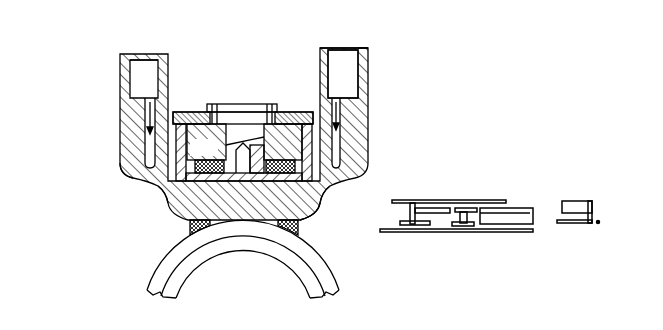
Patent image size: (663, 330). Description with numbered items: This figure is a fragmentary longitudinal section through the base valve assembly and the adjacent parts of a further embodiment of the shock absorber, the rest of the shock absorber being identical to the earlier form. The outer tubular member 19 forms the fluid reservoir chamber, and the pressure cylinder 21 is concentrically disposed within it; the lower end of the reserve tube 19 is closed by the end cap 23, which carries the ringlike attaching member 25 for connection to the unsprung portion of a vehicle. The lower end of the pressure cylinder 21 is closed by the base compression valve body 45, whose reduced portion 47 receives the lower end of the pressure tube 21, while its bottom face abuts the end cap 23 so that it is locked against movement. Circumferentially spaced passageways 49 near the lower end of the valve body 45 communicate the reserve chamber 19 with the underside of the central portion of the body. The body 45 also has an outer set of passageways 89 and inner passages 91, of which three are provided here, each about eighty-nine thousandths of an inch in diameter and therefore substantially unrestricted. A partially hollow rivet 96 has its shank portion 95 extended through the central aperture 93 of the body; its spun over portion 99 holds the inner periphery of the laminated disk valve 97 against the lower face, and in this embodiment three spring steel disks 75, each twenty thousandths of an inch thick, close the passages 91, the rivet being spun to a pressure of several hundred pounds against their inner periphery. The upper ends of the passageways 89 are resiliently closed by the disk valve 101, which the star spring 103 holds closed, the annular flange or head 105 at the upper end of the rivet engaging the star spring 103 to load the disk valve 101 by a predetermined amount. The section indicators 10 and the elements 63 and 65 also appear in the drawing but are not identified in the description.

The section line 10 is at (130, 113).
The tubular member (reserve tube) 19 is at (370, 50).
The pressure cylinder (second tubular member) 21 is at (337, 50).
The end cap 23 is at (348, 178).
The ringlike attaching member 25 is at (325, 273).
The valve body 45 is at (340, 155).
The reduced portion 47 is at (138, 145).
The passageways 49 is at (135, 176).
The gland body 63 is at (196, 112).
The gland cylinder 65 is at (169, 124).
The disk 75 is at (318, 190).
The outer passageways 89 is at (140, 156).
The inner passageway 91 is at (316, 115).
The central aperture 93 is at (223, 148).
The shank portion 95 is at (237, 130).
The rivet 96 is at (271, 100).
The laminated disk valve 97 is at (170, 206).
The spun over portion 99 is at (192, 221).
The disk valve 101 is at (200, 112).
The star spring 103 is at (287, 110).
The annular flange or head 105 is at (212, 110).